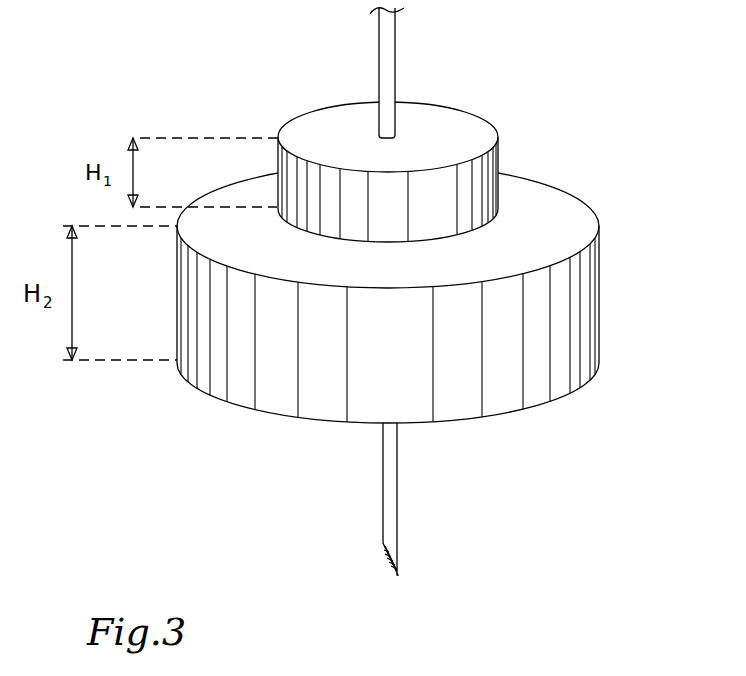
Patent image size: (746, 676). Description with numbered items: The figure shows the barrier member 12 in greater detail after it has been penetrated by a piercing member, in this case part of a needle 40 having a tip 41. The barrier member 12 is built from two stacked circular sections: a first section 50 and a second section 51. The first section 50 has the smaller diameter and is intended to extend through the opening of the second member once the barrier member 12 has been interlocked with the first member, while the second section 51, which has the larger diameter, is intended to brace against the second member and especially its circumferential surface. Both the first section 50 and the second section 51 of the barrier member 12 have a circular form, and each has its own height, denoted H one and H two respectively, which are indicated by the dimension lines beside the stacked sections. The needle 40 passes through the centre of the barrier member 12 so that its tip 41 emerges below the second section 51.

The barrier member 12 is at (160, 81).
The first section 50 is at (473, 181).
The second section 51 is at (563, 300).
The needle 40 is at (393, 463).
The tip 41 is at (390, 557).